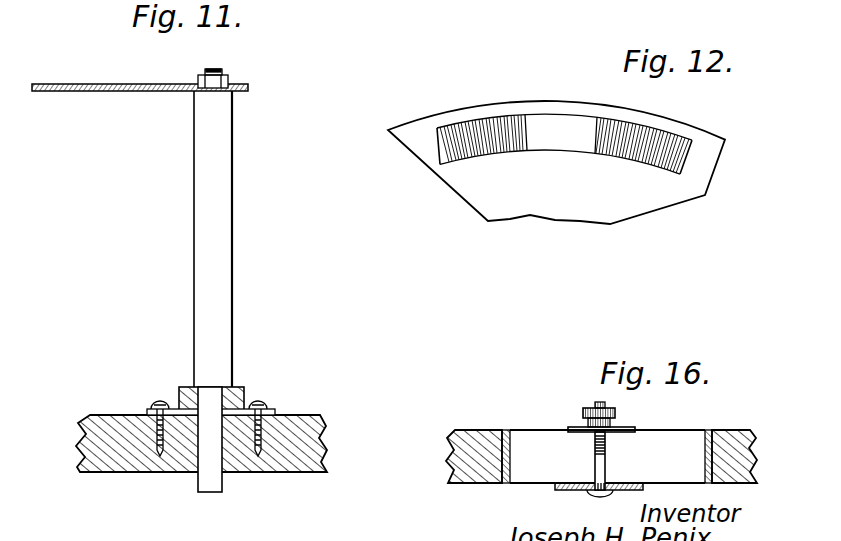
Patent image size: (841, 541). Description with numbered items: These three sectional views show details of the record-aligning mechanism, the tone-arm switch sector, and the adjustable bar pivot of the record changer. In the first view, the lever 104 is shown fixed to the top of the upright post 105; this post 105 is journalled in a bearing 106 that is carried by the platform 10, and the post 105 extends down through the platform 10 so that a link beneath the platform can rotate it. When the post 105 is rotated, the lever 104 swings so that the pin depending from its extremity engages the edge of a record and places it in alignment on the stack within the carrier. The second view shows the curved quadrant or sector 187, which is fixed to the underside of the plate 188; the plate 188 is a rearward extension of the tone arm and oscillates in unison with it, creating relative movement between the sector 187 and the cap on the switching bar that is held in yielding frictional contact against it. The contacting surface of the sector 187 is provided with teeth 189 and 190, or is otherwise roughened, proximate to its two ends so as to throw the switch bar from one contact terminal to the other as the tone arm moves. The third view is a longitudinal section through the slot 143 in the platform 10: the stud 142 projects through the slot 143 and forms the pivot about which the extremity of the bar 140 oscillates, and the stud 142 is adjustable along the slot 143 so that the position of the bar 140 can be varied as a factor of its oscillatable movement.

In FIG. 11, the platform 10 is at (308, 438).
In FIG. 16, the platform 10 is at (475, 430).
In FIG. 11, the lever 104 is at (106, 84).
In FIG. 11, the post 105 is at (218, 177).
In FIG. 11, the bearing 106 is at (245, 393).
In FIG. 12, the sector 187 is at (573, 127).
In FIG. 12, the plate 188 is at (568, 200).
In FIG. 12, the teeth 189 is at (450, 162).
In FIG. 12, the teeth 190 is at (677, 133).
In FIG. 16, the bar 140 is at (577, 488).
In FIG. 16, the stud 142 is at (594, 455).
In FIG. 16, the slot 143 is at (680, 438).